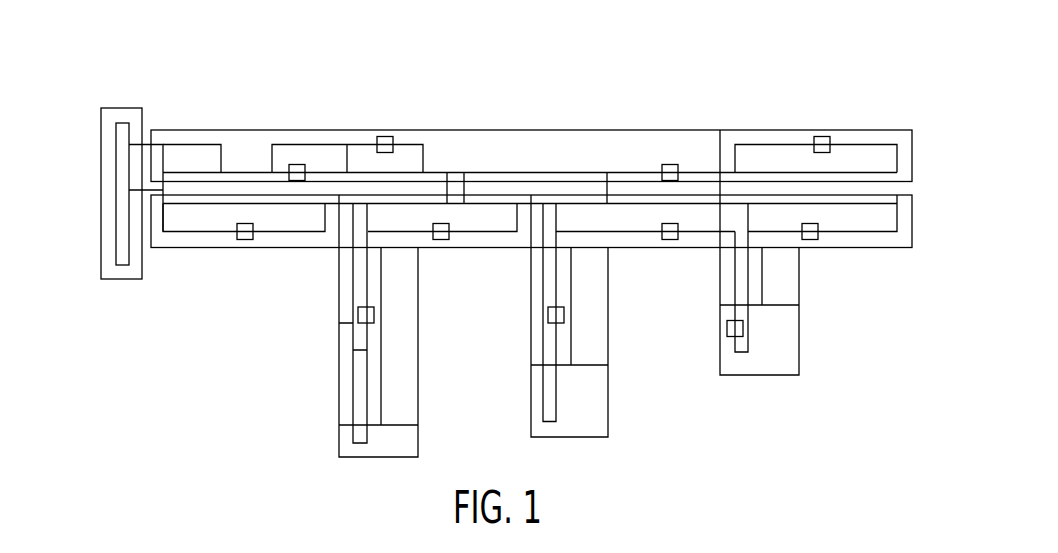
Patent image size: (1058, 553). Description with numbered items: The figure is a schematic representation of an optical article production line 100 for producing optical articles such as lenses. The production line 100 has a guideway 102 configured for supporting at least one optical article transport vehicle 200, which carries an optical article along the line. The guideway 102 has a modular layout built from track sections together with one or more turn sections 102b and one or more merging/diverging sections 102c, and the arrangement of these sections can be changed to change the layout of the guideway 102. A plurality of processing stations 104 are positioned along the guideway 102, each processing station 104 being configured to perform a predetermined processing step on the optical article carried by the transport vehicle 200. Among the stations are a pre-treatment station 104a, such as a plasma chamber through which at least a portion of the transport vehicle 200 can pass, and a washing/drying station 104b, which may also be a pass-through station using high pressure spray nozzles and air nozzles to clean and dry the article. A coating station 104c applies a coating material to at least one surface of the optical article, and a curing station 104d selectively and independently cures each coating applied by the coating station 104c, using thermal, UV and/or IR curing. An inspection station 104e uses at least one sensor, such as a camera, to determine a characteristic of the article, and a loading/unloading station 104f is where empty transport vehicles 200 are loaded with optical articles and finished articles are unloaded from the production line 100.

The production line 100 is at (824, 53).
The guideway 102 is at (843, 236).
The turn section 102b is at (510, 173).
The merging/diverging section 102c is at (560, 203).
The processing station 104 is at (97, 266).
The pre-treatment station 104a is at (408, 407).
The washing/drying station 104b is at (600, 403).
The coating station 104c is at (790, 357).
The curing station 104d is at (840, 138).
The inspection station 104e is at (443, 140).
The loading/unloading station 104f is at (123, 116).
The optical article transport vehicle 200 is at (565, 313).